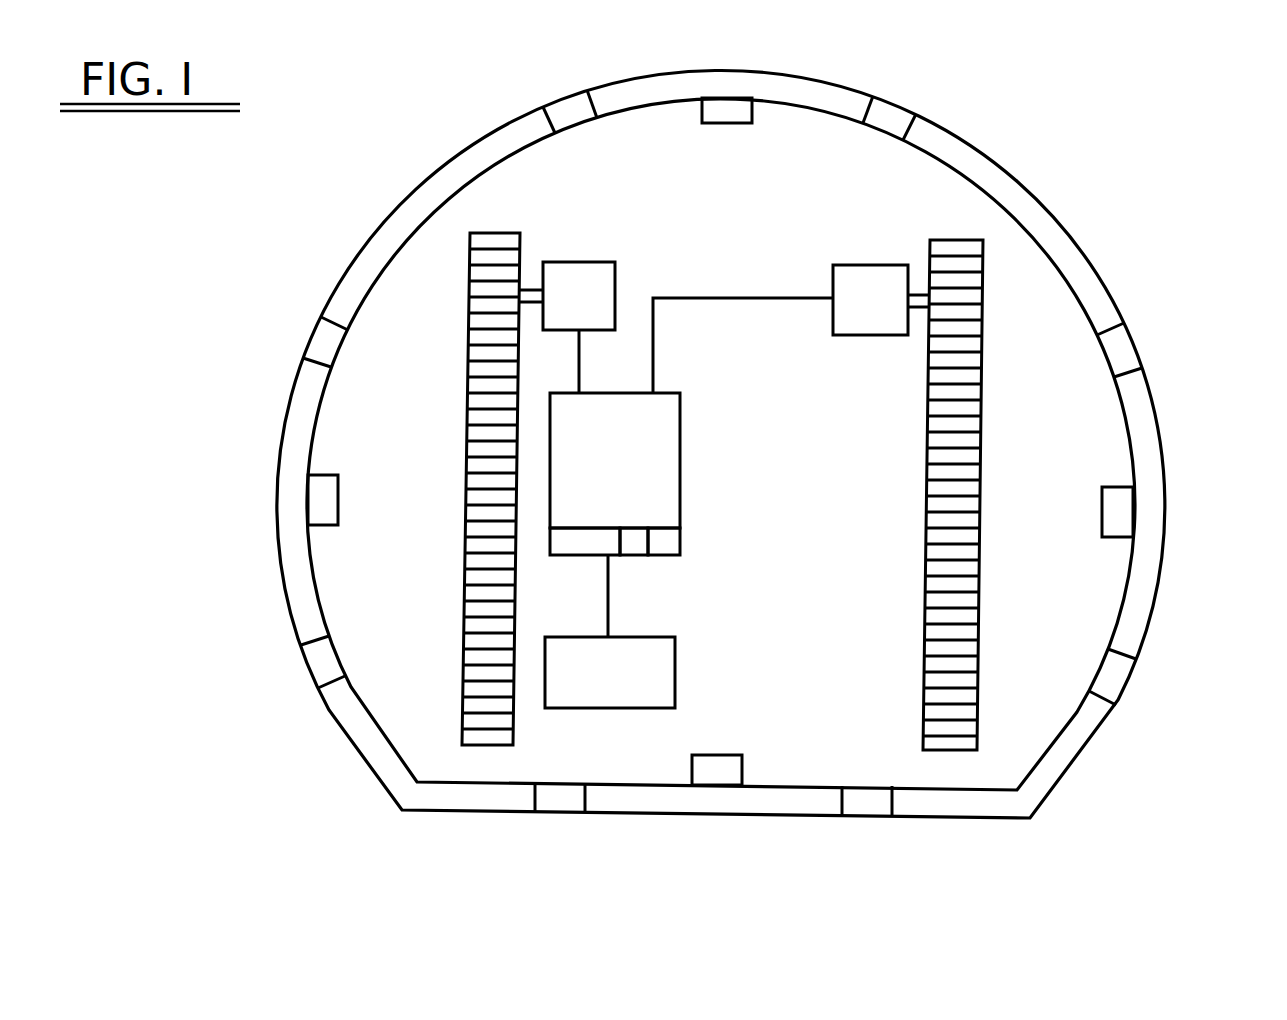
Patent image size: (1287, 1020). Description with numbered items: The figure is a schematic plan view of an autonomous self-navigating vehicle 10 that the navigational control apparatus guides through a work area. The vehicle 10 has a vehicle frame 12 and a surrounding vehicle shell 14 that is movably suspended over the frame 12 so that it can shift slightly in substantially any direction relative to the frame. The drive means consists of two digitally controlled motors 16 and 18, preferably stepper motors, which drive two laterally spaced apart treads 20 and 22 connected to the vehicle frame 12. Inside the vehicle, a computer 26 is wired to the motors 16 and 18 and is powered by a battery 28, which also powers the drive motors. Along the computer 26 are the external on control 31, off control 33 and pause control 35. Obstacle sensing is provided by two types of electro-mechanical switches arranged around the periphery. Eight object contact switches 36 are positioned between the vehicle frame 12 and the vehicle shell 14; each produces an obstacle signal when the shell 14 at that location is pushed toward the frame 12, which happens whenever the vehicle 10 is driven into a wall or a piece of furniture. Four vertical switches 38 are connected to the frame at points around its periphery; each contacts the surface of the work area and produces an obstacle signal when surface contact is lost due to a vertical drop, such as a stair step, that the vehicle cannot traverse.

The vehicle 10 is at (1148, 177).
The vehicle frame 12 is at (1040, 356).
The vehicle shell 14 is at (1163, 440).
The digitally controlled motor 16 is at (588, 279).
The digitally controlled motor 18 is at (871, 279).
The tread 20 is at (472, 448).
The tread 22 is at (978, 480).
The computer 26 is at (668, 455).
The battery 28 is at (666, 665).
The on control 31 is at (667, 545).
The off control 33 is at (600, 547).
The pause control 35 is at (628, 547).
The object contact switch 36 is at (571, 112).
The vertical switch 38 is at (735, 112).